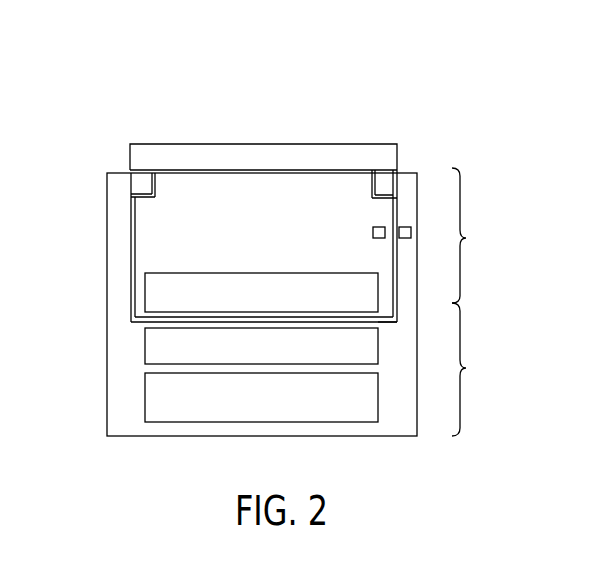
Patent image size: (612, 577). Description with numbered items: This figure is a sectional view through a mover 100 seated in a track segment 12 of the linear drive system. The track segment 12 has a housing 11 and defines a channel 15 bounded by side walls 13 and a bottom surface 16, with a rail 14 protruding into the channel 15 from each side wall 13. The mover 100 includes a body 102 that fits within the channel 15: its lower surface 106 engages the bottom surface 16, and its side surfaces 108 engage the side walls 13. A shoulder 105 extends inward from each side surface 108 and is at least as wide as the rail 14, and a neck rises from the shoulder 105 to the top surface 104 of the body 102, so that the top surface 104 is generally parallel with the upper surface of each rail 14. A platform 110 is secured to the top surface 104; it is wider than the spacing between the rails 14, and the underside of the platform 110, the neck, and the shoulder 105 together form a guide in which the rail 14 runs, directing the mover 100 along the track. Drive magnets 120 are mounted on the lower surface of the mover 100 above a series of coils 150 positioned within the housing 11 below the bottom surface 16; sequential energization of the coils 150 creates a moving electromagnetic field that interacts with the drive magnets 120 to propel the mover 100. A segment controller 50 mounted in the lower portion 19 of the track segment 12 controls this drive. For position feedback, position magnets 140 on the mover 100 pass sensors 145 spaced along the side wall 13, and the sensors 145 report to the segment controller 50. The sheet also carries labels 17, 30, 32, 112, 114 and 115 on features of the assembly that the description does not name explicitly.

The housing 11 is at (122, 408).
The track segment 12 is at (216, 310).
The side walls 13 is at (284, 178).
The rail 14 is at (264, 189).
The channel 15 is at (130, 204).
The bottom surface 16 is at (122, 322).
The upper assembly 17 is at (464, 237).
The lower portion 19 is at (464, 368).
The inner corner 30 is at (140, 180).
The flange edge 32 is at (156, 192).
The segment controller 50 is at (280, 417).
The mover 100 is at (261, 139).
The body 102 is at (250, 183).
The top surface 104 is at (338, 178).
The shoulder 105 is at (375, 196).
The lower surface 106 is at (382, 322).
The side surfaces 108 is at (400, 277).
The platform 110 is at (357, 131).
The lid 112 is at (205, 142).
The notch inner wall 114 is at (382, 168).
The notch outer wall 115 is at (373, 175).
The drive magnets 120 is at (212, 290).
The position magnets 140 is at (384, 228).
The sensors 145 is at (408, 227).
The coils 150 is at (290, 360).